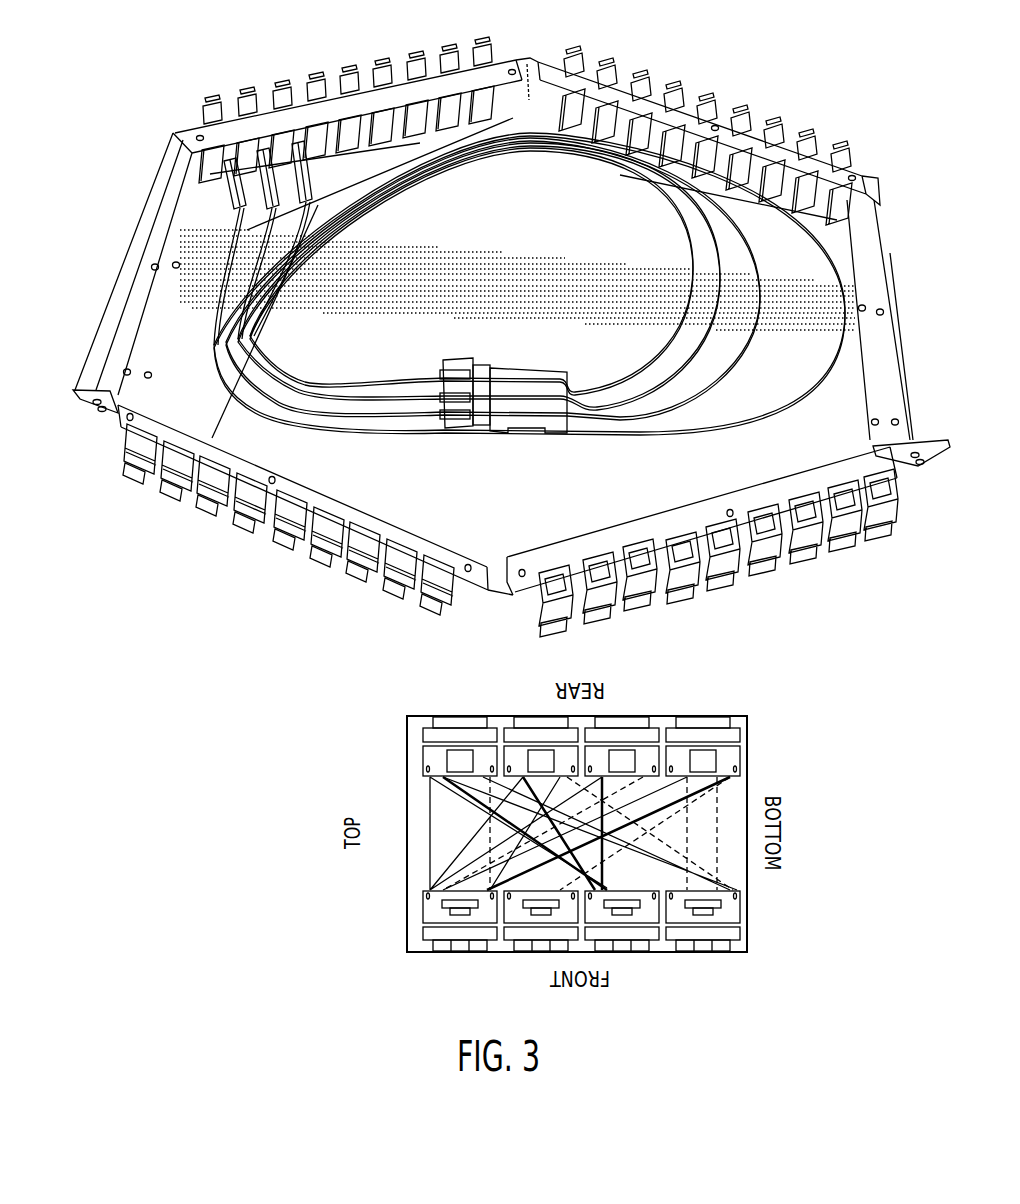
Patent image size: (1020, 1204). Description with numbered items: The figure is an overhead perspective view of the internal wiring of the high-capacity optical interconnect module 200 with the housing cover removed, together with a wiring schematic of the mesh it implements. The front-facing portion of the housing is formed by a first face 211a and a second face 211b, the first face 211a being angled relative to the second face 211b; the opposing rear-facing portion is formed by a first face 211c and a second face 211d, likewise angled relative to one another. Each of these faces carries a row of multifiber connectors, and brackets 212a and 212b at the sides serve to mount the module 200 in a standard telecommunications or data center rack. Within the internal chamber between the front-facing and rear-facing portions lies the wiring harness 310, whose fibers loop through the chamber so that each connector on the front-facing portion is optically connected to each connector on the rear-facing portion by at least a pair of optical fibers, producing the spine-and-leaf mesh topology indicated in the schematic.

The high-capacity optical interconnect module 200 is at (160, 118).
The first face of the front-facing portion 211a is at (458, 620).
The second face of the front-facing portion 211b is at (913, 533).
The first face of the rear-facing portion 211c is at (498, 37).
The second face of the rear-facing portion 211d is at (860, 128).
The bracket 212a is at (93, 386).
The bracket 212b is at (940, 438).
The wiring harness 310 is at (220, 265).